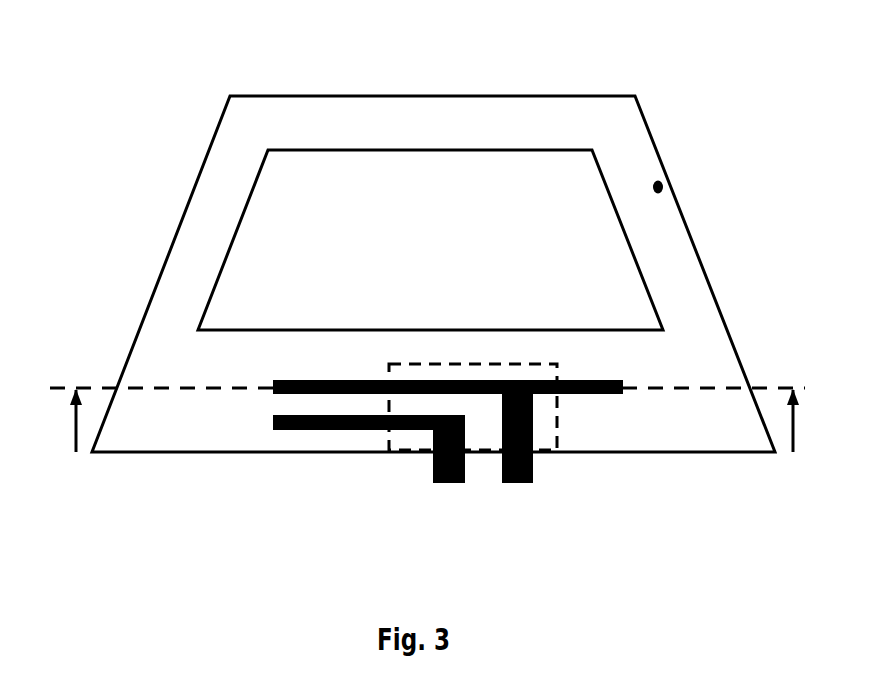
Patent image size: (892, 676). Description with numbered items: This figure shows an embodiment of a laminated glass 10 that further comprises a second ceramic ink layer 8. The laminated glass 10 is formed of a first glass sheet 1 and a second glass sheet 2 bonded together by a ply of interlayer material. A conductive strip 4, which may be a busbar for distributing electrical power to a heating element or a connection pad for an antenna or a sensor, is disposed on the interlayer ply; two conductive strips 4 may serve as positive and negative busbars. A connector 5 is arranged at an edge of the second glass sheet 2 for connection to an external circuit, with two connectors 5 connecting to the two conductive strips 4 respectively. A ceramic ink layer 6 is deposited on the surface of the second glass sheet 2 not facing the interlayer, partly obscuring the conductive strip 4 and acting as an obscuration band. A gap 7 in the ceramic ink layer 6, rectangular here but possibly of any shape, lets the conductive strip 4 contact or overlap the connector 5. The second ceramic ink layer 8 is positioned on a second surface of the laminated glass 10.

The laminated glass 10 is at (421, 300).
The first glass sheet 1 is at (416, 274).
The second glass sheet 2 is at (190, 198).
The conductive strip 4 is at (273, 396).
The connector 5 is at (515, 485).
The ceramic ink layer 6 is at (721, 161).
The gap 7 is at (558, 408).
The second ceramic ink layer 8 is at (664, 183).